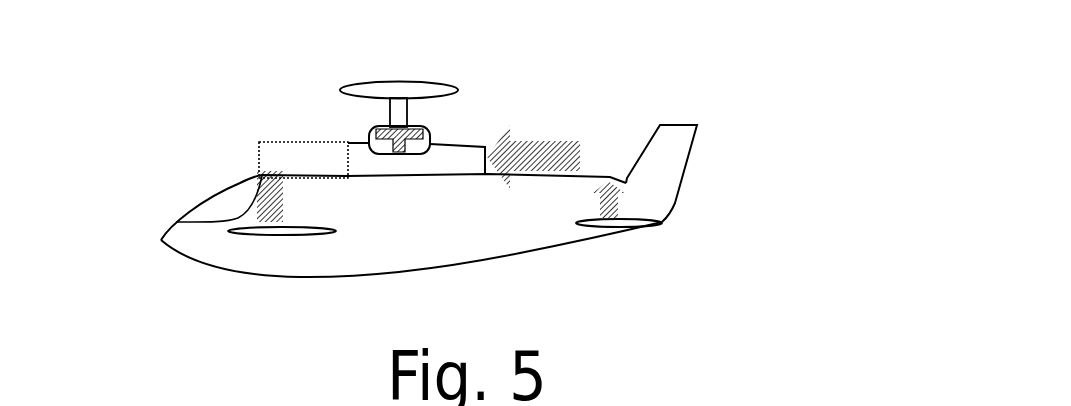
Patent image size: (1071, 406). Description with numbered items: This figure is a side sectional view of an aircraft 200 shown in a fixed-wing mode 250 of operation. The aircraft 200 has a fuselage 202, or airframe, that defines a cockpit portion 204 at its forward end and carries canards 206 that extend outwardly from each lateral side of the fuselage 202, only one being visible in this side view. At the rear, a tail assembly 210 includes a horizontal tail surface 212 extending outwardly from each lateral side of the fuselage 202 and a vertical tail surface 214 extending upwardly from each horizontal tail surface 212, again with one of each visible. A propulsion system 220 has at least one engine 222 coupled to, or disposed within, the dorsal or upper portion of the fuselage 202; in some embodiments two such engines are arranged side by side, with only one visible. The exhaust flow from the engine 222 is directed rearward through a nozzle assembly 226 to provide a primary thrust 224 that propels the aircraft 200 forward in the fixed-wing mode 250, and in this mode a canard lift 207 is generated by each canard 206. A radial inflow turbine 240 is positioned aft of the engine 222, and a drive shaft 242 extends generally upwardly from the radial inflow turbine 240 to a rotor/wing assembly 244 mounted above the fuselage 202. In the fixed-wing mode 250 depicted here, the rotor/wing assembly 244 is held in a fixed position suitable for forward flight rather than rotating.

The aircraft 200 is at (126, 66).
The fuselage 202 is at (193, 263).
The cockpit portion 204 is at (202, 200).
The canard 206 is at (272, 235).
The canard lift 207 is at (255, 175).
The tail assembly 210 is at (695, 90).
The horizontal tail surface 212 is at (612, 228).
The vertical tail surface 214 is at (692, 150).
The propulsion system 220 is at (272, 75).
The engine 222 is at (275, 142).
The primary thrust 224 is at (545, 140).
The nozzle assembly 226 is at (485, 146).
The radial inflow turbine 240 is at (367, 135).
The drive shaft 242 is at (407, 118).
The rotor/wing assembly 244 is at (366, 82).
The fixed-wing mode 250 is at (640, 62).